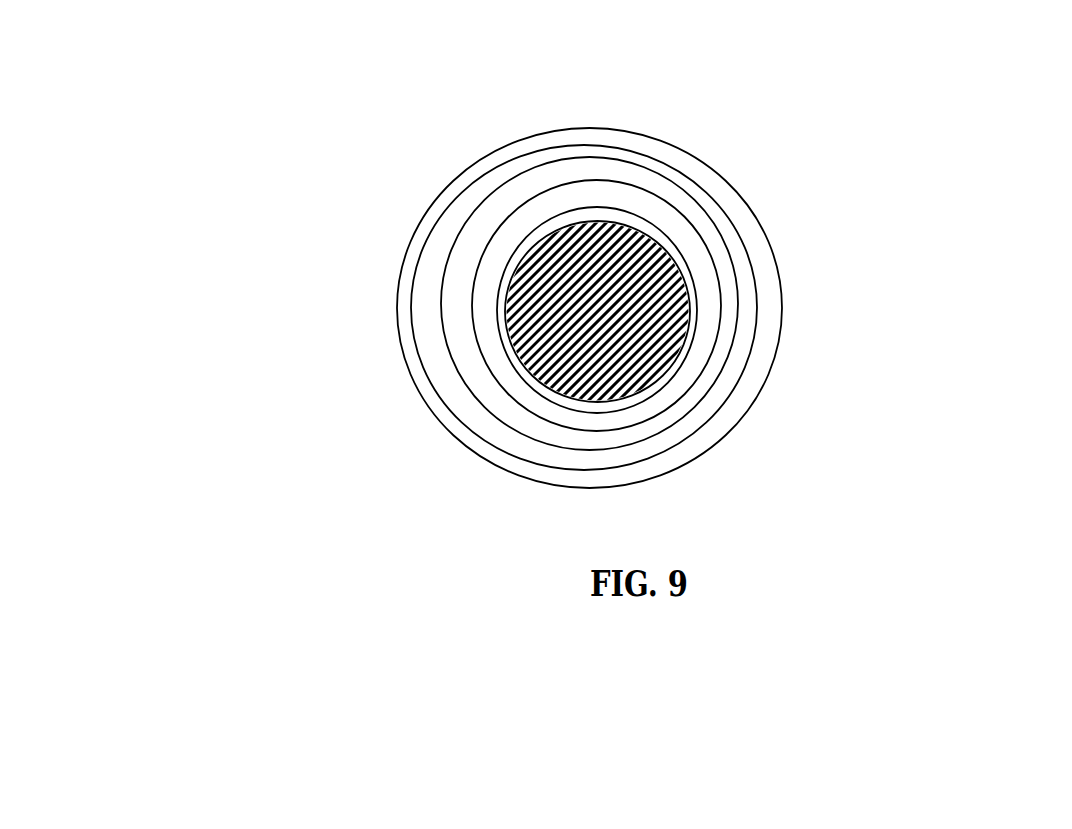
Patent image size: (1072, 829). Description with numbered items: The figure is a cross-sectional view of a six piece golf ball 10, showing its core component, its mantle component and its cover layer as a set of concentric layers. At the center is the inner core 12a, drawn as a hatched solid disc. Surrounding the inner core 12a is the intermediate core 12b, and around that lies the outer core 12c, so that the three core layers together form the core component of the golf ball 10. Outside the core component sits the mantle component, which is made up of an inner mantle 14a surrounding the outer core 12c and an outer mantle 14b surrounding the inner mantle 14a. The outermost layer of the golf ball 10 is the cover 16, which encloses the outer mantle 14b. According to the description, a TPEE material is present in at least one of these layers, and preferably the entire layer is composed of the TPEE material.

The golf ball 10 is at (602, 267).
The inner core 12a is at (685, 348).
The intermediate core 12b is at (545, 403).
The outer core 12c is at (482, 339).
The inner mantle 14a is at (495, 214).
The outer mantle 14b is at (697, 193).
The cover 16 is at (760, 219).